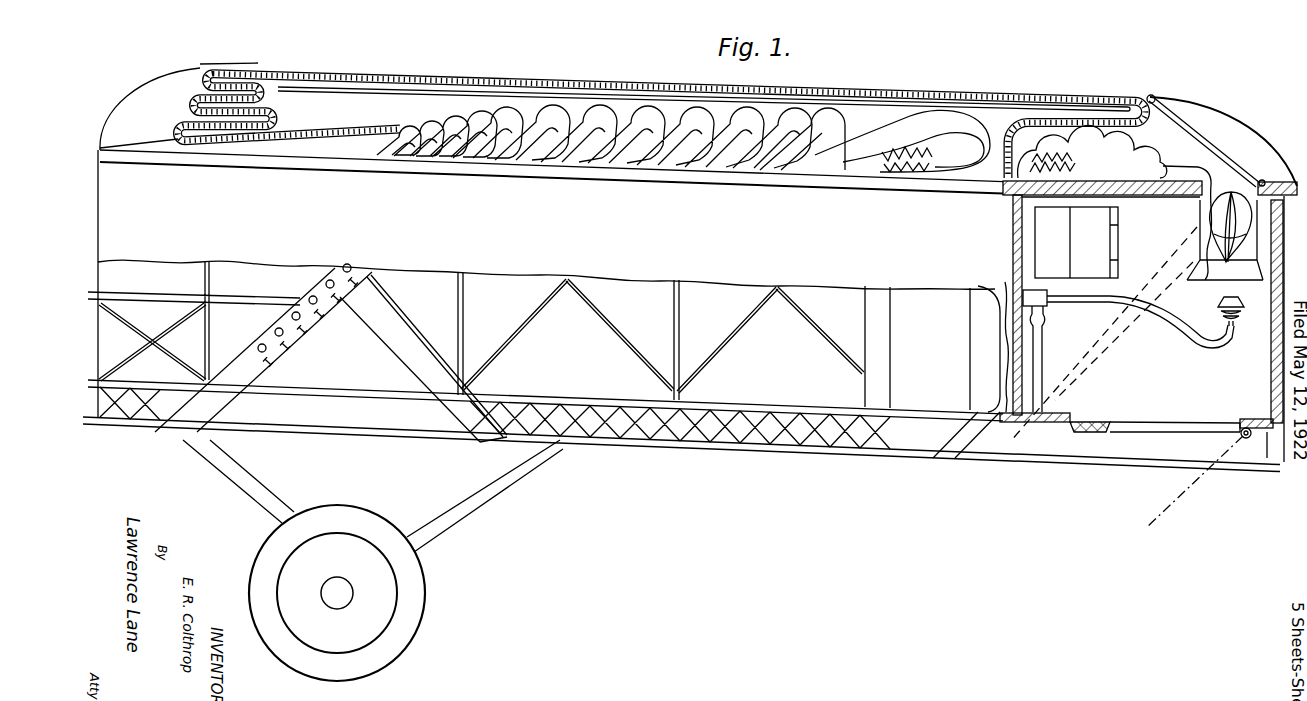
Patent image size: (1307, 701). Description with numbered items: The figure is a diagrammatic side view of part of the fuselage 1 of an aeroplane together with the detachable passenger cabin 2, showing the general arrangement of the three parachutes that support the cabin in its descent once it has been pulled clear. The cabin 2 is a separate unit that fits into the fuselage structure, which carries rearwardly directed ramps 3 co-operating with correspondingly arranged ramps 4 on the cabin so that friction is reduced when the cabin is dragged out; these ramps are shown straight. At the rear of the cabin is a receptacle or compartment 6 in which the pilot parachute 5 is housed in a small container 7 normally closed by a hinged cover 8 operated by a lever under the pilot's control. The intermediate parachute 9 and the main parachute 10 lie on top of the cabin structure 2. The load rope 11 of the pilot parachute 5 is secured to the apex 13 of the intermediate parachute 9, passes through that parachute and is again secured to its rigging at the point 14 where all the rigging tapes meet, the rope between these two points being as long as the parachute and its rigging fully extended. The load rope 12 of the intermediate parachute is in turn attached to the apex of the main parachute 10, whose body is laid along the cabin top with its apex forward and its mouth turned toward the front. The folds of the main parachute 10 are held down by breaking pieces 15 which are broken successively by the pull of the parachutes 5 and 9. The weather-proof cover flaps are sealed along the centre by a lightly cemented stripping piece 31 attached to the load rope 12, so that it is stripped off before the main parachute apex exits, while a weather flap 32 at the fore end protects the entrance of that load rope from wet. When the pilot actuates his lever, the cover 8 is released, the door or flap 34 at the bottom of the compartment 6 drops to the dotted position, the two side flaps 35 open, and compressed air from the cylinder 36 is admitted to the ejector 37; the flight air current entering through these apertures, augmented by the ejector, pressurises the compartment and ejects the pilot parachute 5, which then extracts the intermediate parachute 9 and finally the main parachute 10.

The fuselage 1 is at (85, 427).
The passenger cabin 2 is at (100, 202).
The ramps 3 is at (160, 425).
The ramps 4 is at (190, 425).
The pilot parachute 5 is at (1268, 182).
The compartment 6 is at (1167, 395).
The container 7 is at (1283, 208).
The hinged cover 8 is at (1192, 120).
The intermediate parachute 9 is at (1097, 147).
The main parachute 10 is at (640, 117).
The load rope 11 is at (1235, 168).
The load rope 12 is at (958, 96).
The apex 13 is at (1163, 170).
The point 14 is at (1023, 170).
The breaking pieces 15 is at (500, 123).
The stripping piece 31 is at (895, 98).
The weather flap 32 is at (140, 89).
The door or flap 34 is at (1177, 440).
The flaps 35 is at (1035, 232).
The cylinder 36 is at (1028, 405).
The ejector 37 is at (1237, 320).